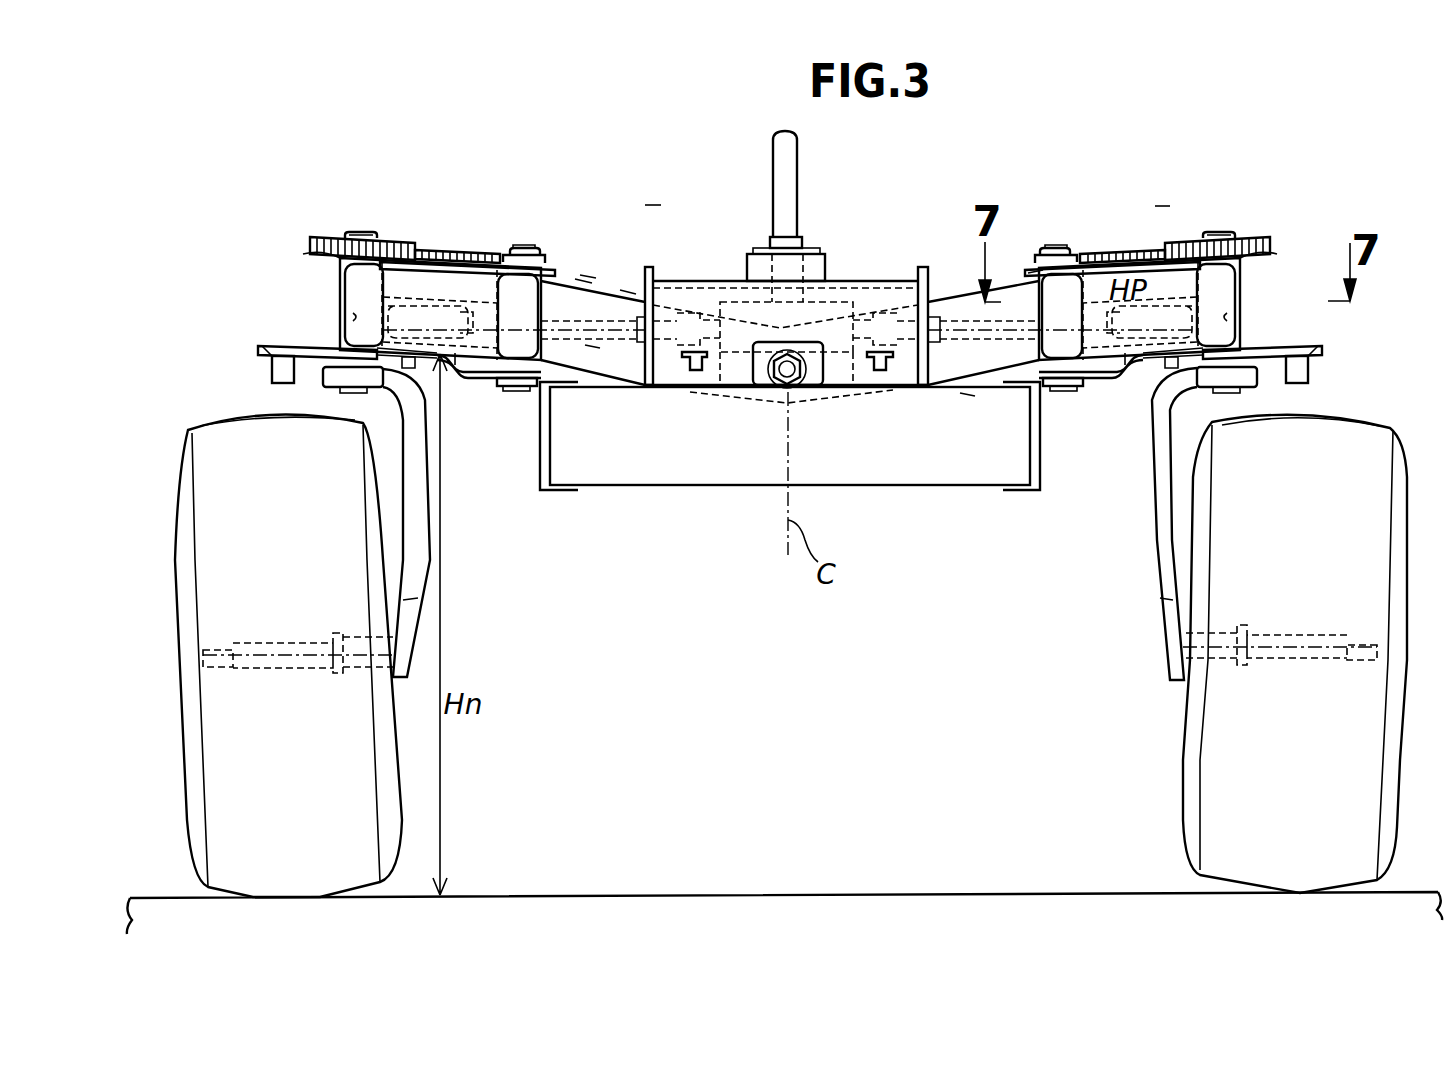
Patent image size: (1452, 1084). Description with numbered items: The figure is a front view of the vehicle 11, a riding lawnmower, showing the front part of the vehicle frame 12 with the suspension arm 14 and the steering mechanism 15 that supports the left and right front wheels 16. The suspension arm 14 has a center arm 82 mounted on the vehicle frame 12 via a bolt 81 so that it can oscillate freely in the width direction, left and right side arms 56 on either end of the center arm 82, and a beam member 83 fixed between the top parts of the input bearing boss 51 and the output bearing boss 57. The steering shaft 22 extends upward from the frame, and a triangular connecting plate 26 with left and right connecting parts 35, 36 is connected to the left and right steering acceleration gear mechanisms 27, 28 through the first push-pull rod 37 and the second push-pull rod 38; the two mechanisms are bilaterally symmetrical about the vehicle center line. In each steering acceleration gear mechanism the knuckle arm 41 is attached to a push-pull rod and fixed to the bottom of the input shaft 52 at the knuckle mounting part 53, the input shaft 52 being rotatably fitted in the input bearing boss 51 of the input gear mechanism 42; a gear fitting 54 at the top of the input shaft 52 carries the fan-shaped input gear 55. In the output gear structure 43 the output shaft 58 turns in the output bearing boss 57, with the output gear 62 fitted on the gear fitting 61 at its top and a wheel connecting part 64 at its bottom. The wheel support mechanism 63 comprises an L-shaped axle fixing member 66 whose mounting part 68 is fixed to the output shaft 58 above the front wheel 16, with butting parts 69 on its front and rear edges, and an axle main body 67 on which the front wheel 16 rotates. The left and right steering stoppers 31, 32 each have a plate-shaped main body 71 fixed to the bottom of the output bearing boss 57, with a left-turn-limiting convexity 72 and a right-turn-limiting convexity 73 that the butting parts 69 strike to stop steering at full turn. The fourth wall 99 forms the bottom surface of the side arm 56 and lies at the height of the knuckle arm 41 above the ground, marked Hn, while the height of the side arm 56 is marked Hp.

The vehicle 11 is at (659, 186).
The vehicle frame 12 is at (710, 255).
The suspension arm 14 is at (613, 262).
The steering mechanism 15 is at (916, 237).
The front wheel 16 is at (222, 806).
The steering shaft 22 is at (800, 180).
The connecting plate 26 is at (735, 397).
The left steering acceleration gear mechanism 27 is at (1163, 205).
The right steering acceleration gear mechanism 28 is at (588, 272).
The left steering stopper 31 is at (1320, 345).
The right steering stopper 32 is at (262, 345).
The left connecting part 35 is at (887, 372).
The right connecting part 36 is at (680, 372).
The first push-pull rod 37 is at (965, 397).
The second push-pull rod 38 is at (592, 352).
The knuckle arm 41 is at (457, 366).
The left input gear mechanism 42 is at (526, 228).
The left output gear structure 43 is at (368, 215).
The input bearing boss 51 is at (583, 275).
The input shaft 52 is at (542, 254).
The knuckle mounting part 53 is at (510, 391).
The gear fitting 54 is at (514, 248).
The input gear 55 is at (455, 252).
The side arm 56 is at (353, 317).
The output bearing boss 57 is at (340, 262).
The output shaft 58 is at (370, 232).
The gear fitting 61 is at (352, 238).
The output gear 62 is at (337, 251).
The wheel support mechanism 63 is at (455, 572).
The wheel connecting part 64 is at (345, 414).
The axle fixing member 66 is at (420, 600).
The axle main body 67 is at (255, 640).
The mounting part 68 is at (320, 378).
The butting part 69 is at (390, 395).
The main body 71 is at (290, 348).
The left-turn-limiting convexity 72 is at (1308, 372).
The right-turn-limiting convexity 73 is at (272, 372).
The bolt 81 is at (785, 380).
The center arm 82 is at (628, 292).
The beam member 83 is at (392, 305).
The fourth wall 99 is at (468, 360).